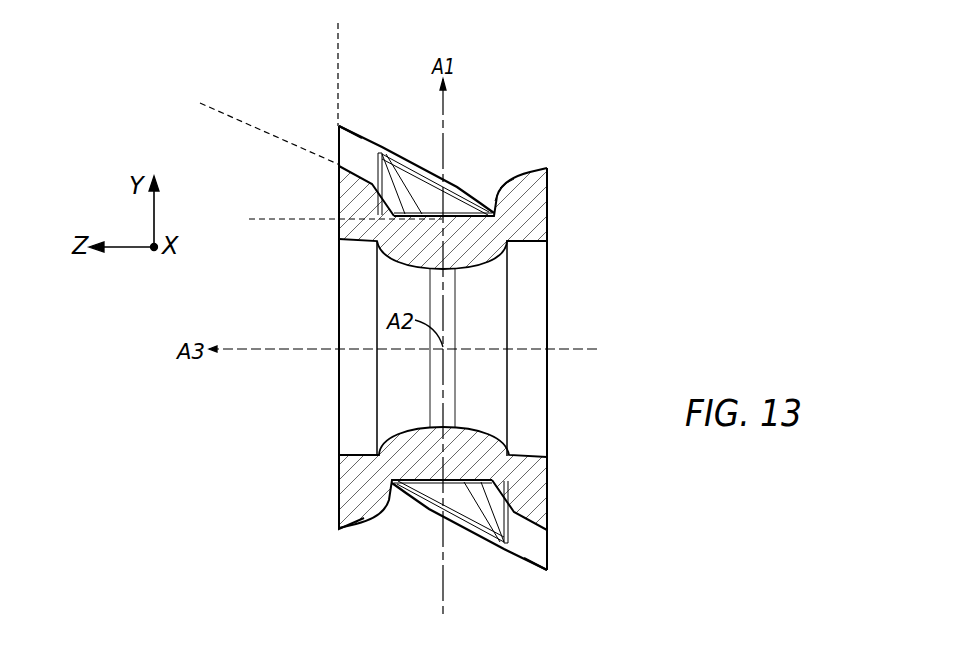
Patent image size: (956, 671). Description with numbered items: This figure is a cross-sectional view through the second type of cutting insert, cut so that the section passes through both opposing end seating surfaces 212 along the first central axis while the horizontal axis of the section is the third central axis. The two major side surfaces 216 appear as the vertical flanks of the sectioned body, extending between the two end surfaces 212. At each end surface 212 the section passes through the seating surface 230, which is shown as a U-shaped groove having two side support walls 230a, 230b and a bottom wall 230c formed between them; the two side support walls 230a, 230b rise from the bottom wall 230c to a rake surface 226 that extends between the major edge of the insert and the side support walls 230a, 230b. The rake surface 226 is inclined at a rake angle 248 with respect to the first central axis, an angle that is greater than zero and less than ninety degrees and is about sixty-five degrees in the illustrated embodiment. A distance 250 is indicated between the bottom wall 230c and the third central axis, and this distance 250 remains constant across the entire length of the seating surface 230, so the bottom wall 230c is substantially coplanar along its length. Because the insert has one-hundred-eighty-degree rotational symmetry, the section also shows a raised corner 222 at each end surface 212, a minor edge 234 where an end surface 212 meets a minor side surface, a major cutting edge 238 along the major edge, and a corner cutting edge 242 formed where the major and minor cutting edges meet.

The end seating surface 212 is at (480, 103).
The major side surface 216 is at (549, 289).
The raised corner 222 is at (334, 123).
The rake surface 226 is at (353, 165).
The seating surface 230 is at (463, 187).
The side support wall 230a is at (402, 136).
The side support wall 230b is at (493, 194).
The bottom wall 230c is at (498, 187).
The minor edge 234 is at (403, 520).
The major cutting edge 238 is at (337, 529).
The corner cutting edge 242 is at (336, 129).
The rake angle 248 is at (333, 29).
The distance 250 is at (288, 218).